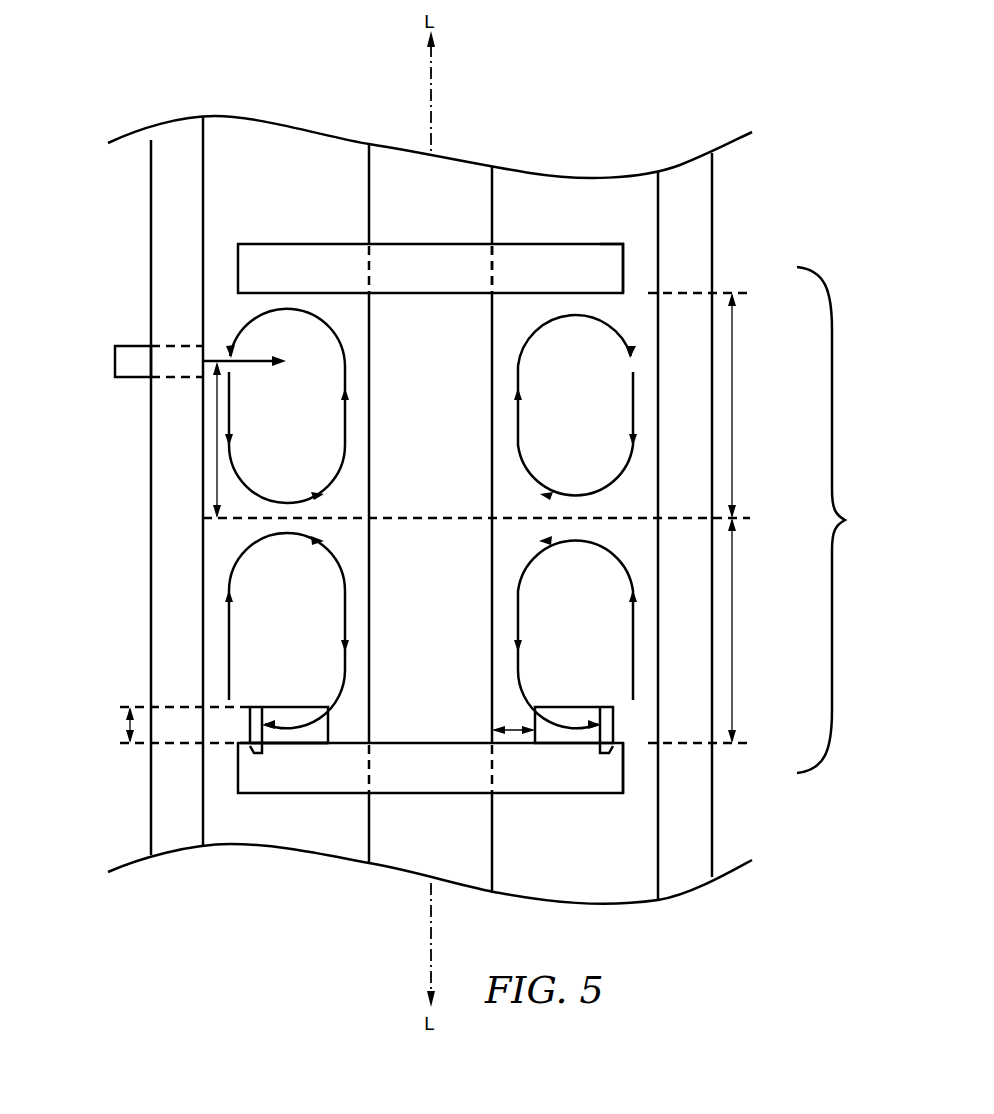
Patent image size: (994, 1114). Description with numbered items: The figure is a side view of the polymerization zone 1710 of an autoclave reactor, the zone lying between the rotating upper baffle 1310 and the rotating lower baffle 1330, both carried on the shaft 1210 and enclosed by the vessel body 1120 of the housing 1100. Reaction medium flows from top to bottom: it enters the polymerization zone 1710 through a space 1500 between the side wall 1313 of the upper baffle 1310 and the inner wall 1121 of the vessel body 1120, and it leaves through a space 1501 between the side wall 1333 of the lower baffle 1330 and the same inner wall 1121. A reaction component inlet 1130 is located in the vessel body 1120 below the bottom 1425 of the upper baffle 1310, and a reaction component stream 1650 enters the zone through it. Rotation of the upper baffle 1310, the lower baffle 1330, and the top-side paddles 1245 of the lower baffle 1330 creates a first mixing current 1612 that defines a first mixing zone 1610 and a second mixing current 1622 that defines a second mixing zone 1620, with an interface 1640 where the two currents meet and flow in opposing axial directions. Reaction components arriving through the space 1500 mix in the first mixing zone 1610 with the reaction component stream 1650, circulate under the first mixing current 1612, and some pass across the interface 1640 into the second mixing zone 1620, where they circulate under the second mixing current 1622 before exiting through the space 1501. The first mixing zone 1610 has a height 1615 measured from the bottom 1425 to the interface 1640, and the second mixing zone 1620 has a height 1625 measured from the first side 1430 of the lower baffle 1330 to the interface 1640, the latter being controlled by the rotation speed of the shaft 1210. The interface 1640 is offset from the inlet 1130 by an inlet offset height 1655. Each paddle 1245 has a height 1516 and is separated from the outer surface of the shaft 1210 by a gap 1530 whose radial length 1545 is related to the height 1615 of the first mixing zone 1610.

The housing 1100 is at (140, 214).
The vessel body 1120 is at (151, 280).
The inner wall 1121 is at (205, 190).
The reaction component inlet 1130 is at (128, 378).
The shaft 1210 is at (493, 200).
The upper baffle 1310 is at (338, 243).
The side wall 1313 is at (624, 250).
The lower baffle 1330 is at (328, 794).
The side wall 1333 is at (623, 768).
The bottom 1425 is at (328, 290).
The first side 1430 is at (308, 744).
The space 1500 is at (222, 248).
The space 1501 is at (223, 800).
The height 1516 is at (128, 722).
The gap 1530 is at (513, 715).
The radial length 1545 is at (514, 745).
The first mixing zone 1610 is at (210, 315).
The first mixing current 1612 is at (343, 430).
The height 1615 is at (733, 396).
The second mixing zone 1620 is at (212, 548).
The second mixing current 1622 is at (341, 580).
The height 1625 is at (733, 626).
The interface 1640 is at (515, 516).
The reaction component stream 1650 is at (246, 364).
The inlet offset height 1655 is at (216, 443).
The polymerization zone 1710 is at (852, 520).
The paddles 1245 is at (282, 728).